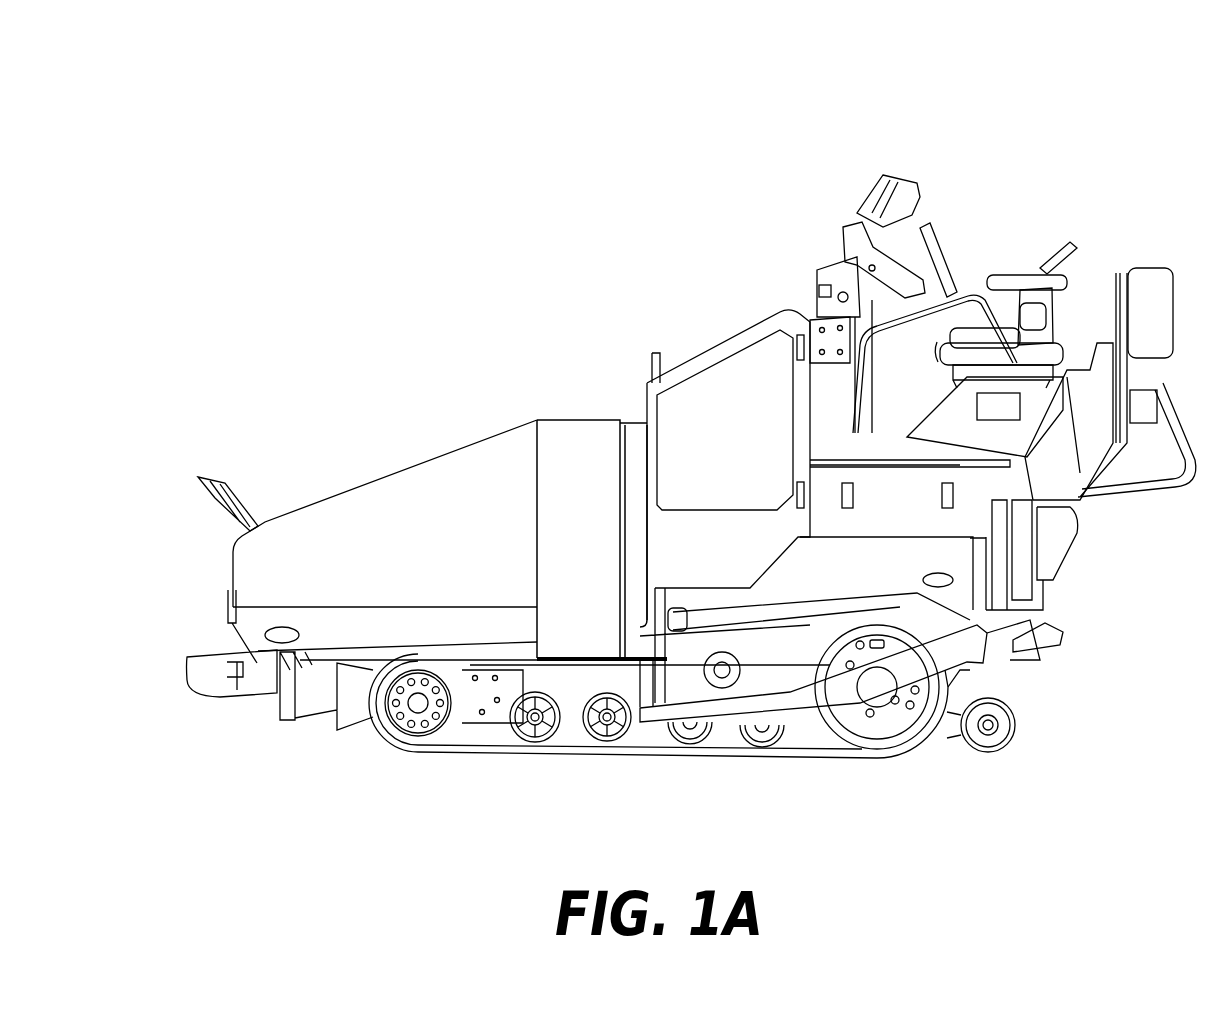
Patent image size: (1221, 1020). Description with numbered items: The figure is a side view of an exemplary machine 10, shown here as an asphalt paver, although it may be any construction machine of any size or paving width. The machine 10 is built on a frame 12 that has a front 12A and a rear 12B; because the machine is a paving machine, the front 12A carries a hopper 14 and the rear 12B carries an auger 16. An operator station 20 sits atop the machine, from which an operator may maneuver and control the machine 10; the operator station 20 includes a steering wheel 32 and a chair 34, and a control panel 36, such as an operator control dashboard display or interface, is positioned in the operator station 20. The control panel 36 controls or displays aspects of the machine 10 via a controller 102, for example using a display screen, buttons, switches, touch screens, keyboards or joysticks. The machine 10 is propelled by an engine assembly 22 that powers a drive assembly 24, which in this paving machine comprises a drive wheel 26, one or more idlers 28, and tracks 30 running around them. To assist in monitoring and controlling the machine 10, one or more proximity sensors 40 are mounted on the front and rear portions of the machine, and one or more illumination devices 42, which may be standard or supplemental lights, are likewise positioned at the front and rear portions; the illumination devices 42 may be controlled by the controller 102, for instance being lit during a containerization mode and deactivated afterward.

The machine 10 is at (345, 122).
The frame 12 is at (777, 587).
The front 12A is at (262, 710).
The rear 12B is at (1026, 680).
The hopper 14 is at (330, 500).
The auger 16 is at (972, 752).
The operator station 20 is at (893, 107).
The engine assembly 22 is at (647, 378).
The drive assembly 24 is at (358, 760).
The drive wheel 26 is at (883, 755).
The idlers 28 is at (603, 742).
The tracks 30 is at (478, 762).
The steering wheel 32 is at (933, 230).
The chair 34 is at (1070, 242).
The control panel 36 is at (917, 183).
The proximity sensor 40 is at (267, 633).
The illumination device 42 is at (212, 490).
The controller 102 is at (992, 422).